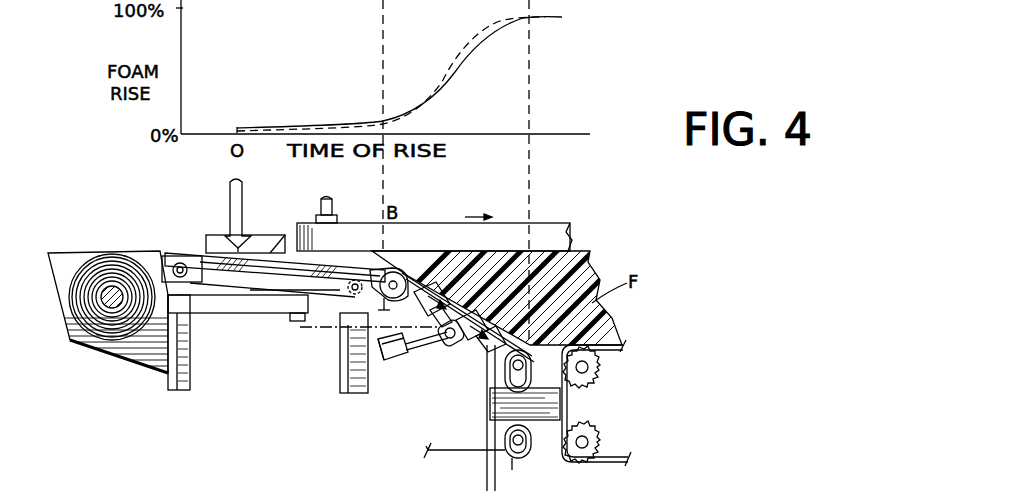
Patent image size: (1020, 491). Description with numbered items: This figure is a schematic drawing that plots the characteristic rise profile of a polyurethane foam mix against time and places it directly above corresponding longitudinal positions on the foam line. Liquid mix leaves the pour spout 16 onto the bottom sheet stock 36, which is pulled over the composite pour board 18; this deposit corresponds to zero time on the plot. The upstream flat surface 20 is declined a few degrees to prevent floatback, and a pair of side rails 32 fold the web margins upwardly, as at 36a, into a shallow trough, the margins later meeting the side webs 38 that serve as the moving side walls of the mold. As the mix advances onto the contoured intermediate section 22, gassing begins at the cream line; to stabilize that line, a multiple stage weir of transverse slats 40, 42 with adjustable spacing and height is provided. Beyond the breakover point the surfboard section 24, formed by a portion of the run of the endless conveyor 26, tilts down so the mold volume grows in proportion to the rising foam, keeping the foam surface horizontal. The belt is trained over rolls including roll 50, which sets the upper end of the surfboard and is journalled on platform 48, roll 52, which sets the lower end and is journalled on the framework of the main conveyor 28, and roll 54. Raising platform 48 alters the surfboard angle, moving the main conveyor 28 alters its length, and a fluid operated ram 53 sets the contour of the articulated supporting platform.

The pour spout 16 is at (230, 206).
The composite pour board 18 is at (184, 214).
The flat surface of pour board 20 is at (231, 270).
The intermediate section of pour board 22 is at (339, 283).
The surfboard section 24 is at (486, 344).
The endless conveyor 26 is at (445, 455).
The main conveyor 28 is at (612, 401).
The side rails 32 is at (206, 252).
The sheet stock 36 is at (100, 262).
The folded margins of web 36a is at (236, 222).
The side webs 38 is at (310, 230).
The transverse slat 40 is at (316, 258).
The transverse slat 42 is at (384, 262).
The platform 48 is at (272, 282).
The roll 50 is at (412, 306).
The roll 52 is at (504, 382).
The fluid operated ram 53 is at (396, 358).
The roll 54 is at (521, 458).